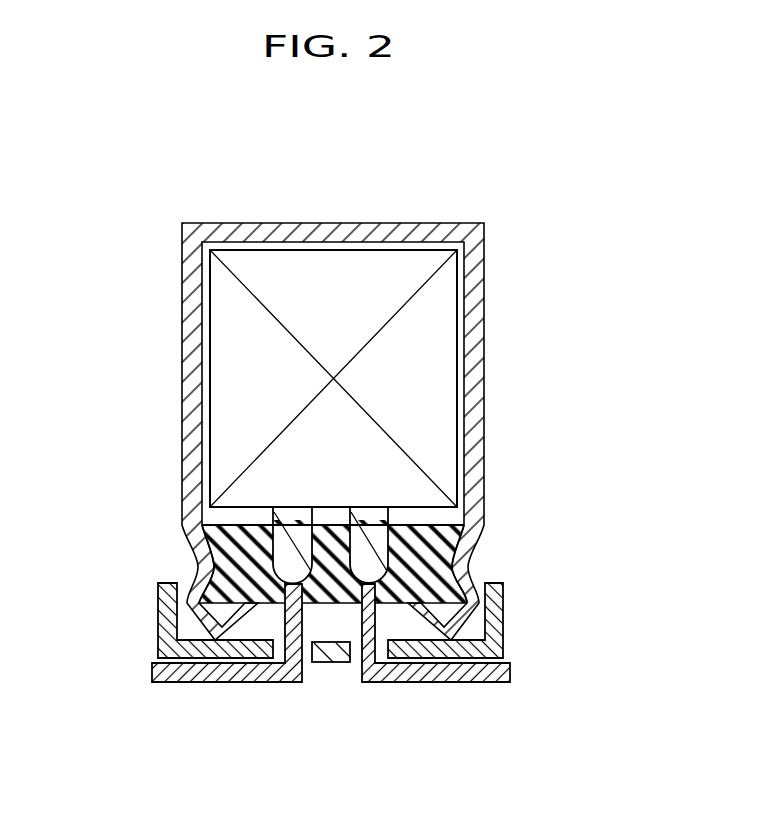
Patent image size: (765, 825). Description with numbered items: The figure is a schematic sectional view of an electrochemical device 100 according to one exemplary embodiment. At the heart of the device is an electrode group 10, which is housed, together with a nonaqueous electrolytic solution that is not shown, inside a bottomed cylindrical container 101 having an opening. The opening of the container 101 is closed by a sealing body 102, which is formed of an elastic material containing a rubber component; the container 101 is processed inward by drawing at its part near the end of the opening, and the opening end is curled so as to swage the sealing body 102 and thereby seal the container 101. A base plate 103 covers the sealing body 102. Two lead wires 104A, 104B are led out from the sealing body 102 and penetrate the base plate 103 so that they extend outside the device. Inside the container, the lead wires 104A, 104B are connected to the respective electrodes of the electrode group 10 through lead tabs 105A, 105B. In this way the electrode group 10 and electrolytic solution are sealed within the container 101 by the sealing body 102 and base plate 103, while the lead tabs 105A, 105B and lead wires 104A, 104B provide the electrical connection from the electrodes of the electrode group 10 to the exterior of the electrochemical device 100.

The electrochemical device 100 is at (358, 210).
The container 101 is at (478, 405).
The electrode group 10 is at (240, 393).
The sealing body 102 is at (410, 563).
The lead tab 105A is at (295, 575).
The lead tab 105B is at (365, 540).
The lead wire 104A is at (220, 682).
The lead wire 104B is at (442, 682).
The base plate 103 is at (165, 635).